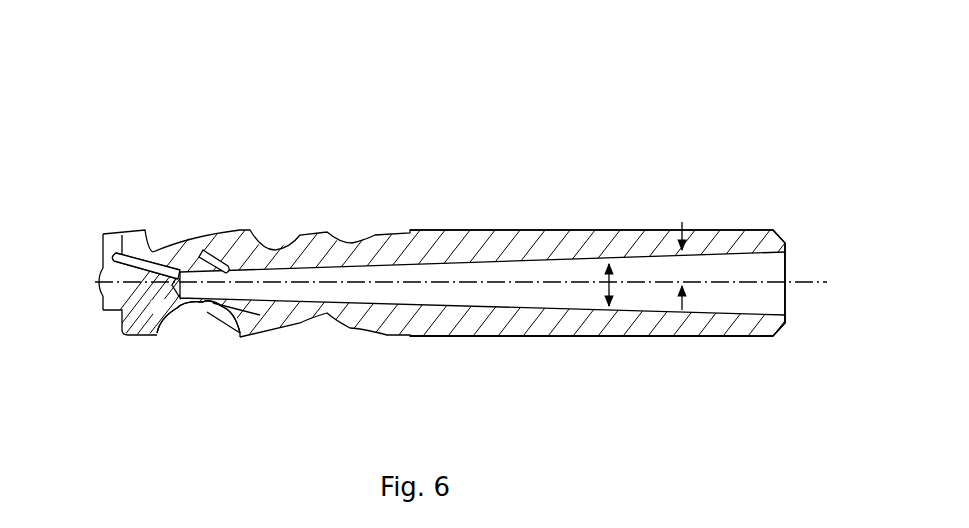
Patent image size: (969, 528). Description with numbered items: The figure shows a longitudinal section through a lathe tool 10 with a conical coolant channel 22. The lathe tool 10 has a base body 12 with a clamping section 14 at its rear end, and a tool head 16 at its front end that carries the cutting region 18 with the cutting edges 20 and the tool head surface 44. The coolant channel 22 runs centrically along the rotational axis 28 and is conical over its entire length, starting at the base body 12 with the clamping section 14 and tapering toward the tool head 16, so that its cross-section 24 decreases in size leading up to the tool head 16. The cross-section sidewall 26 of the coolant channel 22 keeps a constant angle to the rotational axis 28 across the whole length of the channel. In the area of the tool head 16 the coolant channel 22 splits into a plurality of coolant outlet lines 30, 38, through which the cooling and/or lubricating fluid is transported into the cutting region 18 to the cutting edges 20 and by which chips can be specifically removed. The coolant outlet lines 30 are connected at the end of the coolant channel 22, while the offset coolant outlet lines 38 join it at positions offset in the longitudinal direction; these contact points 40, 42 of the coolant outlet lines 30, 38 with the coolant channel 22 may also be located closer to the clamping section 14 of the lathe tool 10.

The lathe tool 10 is at (738, 164).
The base body 12 is at (573, 186).
The clamping section 14 is at (575, 328).
The tool head 16 is at (250, 186).
The cutting region 18 is at (165, 336).
The cutting edge 20 is at (104, 232).
The coolant channel 22 is at (766, 300).
The cross-section 24 is at (612, 285).
The cross-section sidewall of the coolant channel 26 is at (488, 303).
The rotational axis 28 is at (815, 280).
The coolant outlet line 30 is at (155, 252).
The offset coolant outlet line 38 is at (207, 250).
The position of the coolant outlet line on the cooling channel 40 is at (193, 286).
The coolant outlet line/cooling channel contact point 42 is at (207, 286).
The tool head surface 44 is at (101, 284).